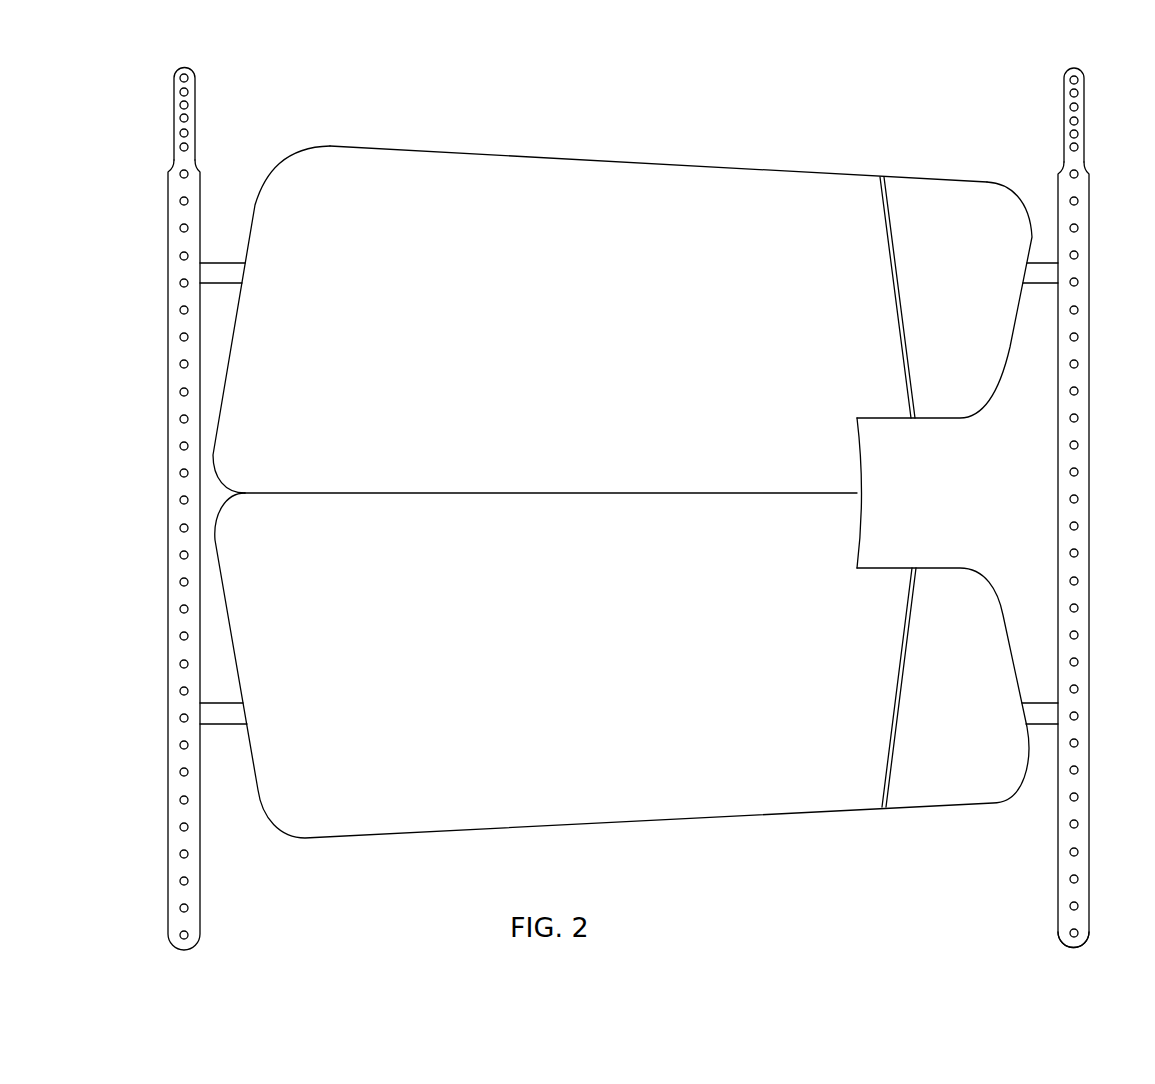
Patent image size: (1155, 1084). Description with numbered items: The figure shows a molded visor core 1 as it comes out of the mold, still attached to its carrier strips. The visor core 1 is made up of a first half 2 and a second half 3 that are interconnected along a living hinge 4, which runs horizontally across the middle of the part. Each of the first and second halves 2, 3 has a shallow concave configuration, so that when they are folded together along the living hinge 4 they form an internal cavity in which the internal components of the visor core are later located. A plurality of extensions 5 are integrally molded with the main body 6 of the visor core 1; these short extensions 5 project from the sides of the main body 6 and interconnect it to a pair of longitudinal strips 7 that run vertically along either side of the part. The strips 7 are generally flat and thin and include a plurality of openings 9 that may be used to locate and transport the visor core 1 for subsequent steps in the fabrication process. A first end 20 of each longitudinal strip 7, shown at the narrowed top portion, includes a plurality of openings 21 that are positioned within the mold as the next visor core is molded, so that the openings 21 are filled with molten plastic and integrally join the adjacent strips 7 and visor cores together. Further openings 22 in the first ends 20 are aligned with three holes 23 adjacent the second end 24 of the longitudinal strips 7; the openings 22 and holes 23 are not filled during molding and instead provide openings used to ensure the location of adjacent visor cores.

The visor core 1 is at (622, 494).
The first half 2 is at (622, 292).
The second half 3 is at (795, 805).
The living hinge 4 is at (808, 493).
The extensions 5 is at (217, 272).
The main body 6 is at (548, 177).
The longitudinal strips 7 is at (621, 495).
The openings 9 is at (183, 474).
The first end 20 is at (177, 79).
The openings 21 is at (180, 118).
The openings 22 is at (1077, 94).
The holes 23 is at (1078, 933).
The second end 24 is at (1050, 931).